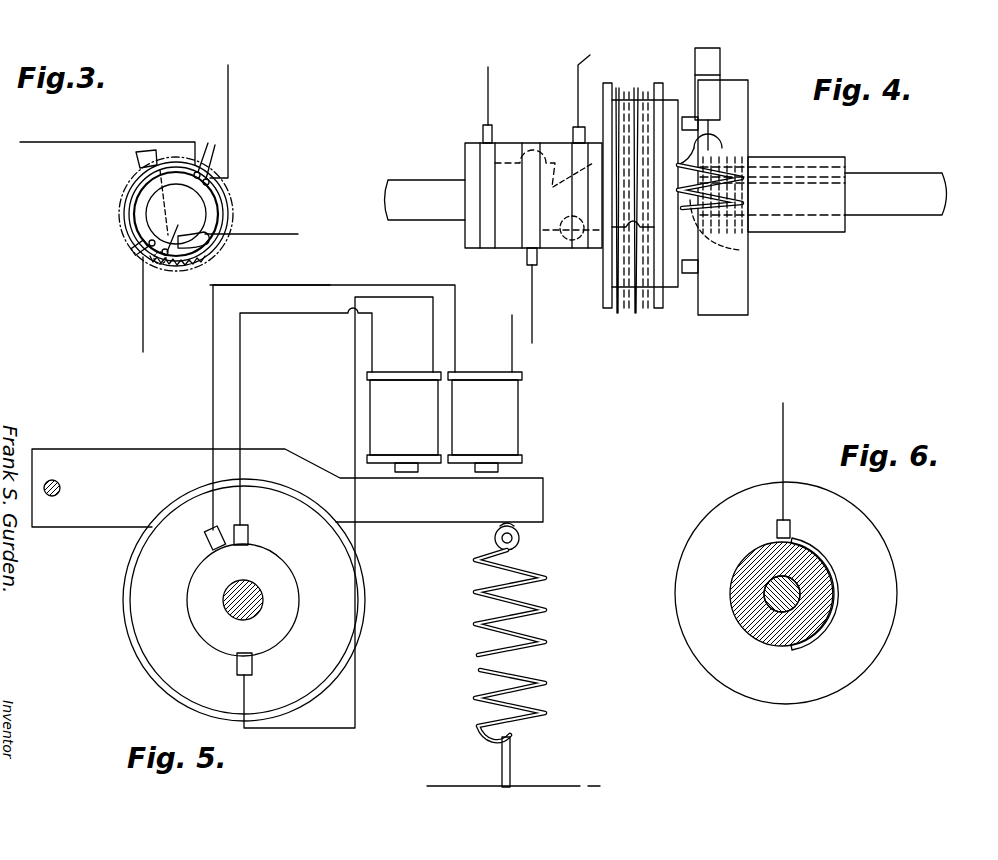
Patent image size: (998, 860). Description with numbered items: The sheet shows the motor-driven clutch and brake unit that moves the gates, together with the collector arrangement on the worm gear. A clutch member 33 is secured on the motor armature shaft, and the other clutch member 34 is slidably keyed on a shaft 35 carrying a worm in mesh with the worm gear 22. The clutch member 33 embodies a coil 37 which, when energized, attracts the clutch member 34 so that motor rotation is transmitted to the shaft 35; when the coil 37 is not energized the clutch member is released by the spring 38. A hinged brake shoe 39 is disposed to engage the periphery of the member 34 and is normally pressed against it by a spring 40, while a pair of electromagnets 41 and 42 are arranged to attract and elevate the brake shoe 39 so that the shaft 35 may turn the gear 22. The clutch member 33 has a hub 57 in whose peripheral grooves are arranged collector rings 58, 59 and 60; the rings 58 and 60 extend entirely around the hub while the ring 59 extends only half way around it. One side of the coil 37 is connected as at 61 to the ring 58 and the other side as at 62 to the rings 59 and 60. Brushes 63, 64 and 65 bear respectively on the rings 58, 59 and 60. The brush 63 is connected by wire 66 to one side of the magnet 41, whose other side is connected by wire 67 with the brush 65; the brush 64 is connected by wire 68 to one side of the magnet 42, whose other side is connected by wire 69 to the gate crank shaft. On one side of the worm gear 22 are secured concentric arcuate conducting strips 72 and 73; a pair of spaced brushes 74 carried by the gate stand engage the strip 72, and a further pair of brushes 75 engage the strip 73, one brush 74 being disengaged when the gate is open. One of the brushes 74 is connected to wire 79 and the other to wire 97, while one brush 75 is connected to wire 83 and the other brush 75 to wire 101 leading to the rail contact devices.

In FIG. 3, the worm gear 22 is at (210, 285).
In FIG. 4, the clutch member 33 is at (673, 290).
In FIG. 5, the clutch member 33 is at (358, 617).
In FIG. 6, the clutch member 33 is at (890, 634).
In FIG. 4, the clutch member 34 is at (722, 318).
In FIG. 5, the clutch member 34 is at (365, 573).
In FIG. 4, the shaft 35 is at (884, 208).
In FIG. 4, the coil 37 is at (633, 212).
In FIG. 4, the spring 38 is at (748, 250).
In FIG. 4, the hinged brake shoe 39 is at (716, 62).
In FIG. 5, the hinged brake shoe 39 is at (167, 452).
In FIG. 4, the spring 40 is at (716, 243).
In FIG. 5, the spring 40 is at (545, 613).
In FIG. 5, the electromagnet 41 is at (404, 422).
In FIG. 5, the electromagnet 42 is at (485, 422).
In FIG. 4, the hub 57 is at (465, 227).
In FIG. 5, the hub 57 is at (290, 571).
In FIG. 6, the hub 57 is at (746, 628).
In FIG. 4, the collector ring 58 is at (522, 236).
In FIG. 4, the collector ring 59 is at (572, 150).
In FIG. 6, the collector ring 59 is at (838, 581).
In FIG. 4, the collector ring 60 is at (480, 160).
In FIG. 4, the connection 61 is at (572, 248).
In FIG. 4, the connection 62 is at (569, 183).
In FIG. 4, the brush 63 is at (538, 262).
In FIG. 5, the brush 63 is at (238, 665).
In FIG. 4, the brush 64 is at (575, 126).
In FIG. 5, the brush 64 is at (208, 536).
In FIG. 6, the brush 64 is at (793, 528).
In FIG. 4, the brush 65 is at (483, 129).
In FIG. 5, the brush 65 is at (250, 528).
In FIG. 4, the wire 66 is at (536, 316).
In FIG. 5, the wire 66 is at (298, 728).
In FIG. 4, the wire 67 is at (488, 80).
In FIG. 5, the wire 67 is at (242, 428).
In FIG. 4, the wire 68 is at (592, 84).
In FIG. 5, the wire 68 is at (213, 393).
In FIG. 6, the wire 68 is at (790, 438).
In FIG. 5, the wire 69 is at (512, 357).
In FIG. 3, the arcuate conducting strip 72 is at (124, 216).
In FIG. 3, the arcuate conducting strip 73 is at (210, 213).
In FIG. 3, the brushes 74 is at (208, 143).
In FIG. 3, the brushes 75 is at (170, 222).
In FIG. 3, the wire 79 is at (122, 142).
In FIG. 3, the wire 83 is at (147, 317).
In FIG. 3, the wire 97 is at (233, 131).
In FIG. 3, the wire 101 is at (264, 236).